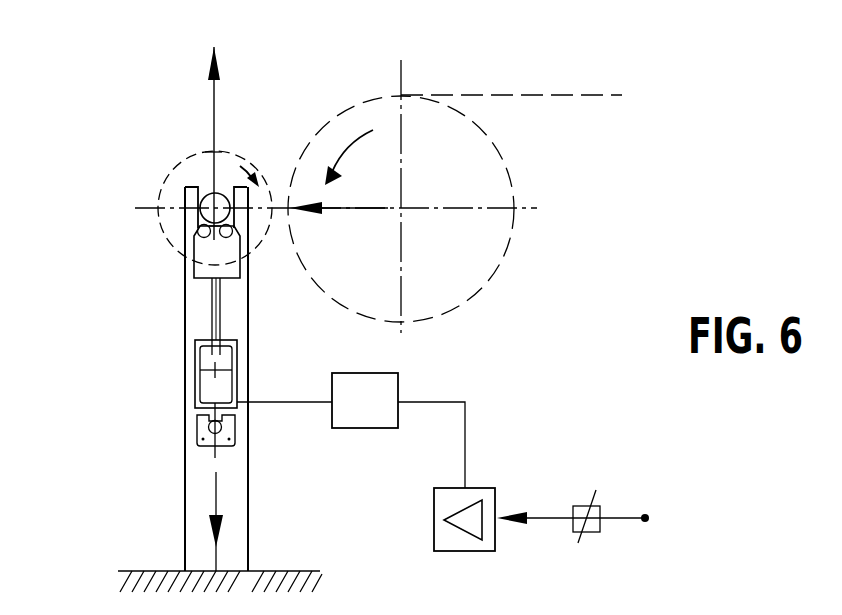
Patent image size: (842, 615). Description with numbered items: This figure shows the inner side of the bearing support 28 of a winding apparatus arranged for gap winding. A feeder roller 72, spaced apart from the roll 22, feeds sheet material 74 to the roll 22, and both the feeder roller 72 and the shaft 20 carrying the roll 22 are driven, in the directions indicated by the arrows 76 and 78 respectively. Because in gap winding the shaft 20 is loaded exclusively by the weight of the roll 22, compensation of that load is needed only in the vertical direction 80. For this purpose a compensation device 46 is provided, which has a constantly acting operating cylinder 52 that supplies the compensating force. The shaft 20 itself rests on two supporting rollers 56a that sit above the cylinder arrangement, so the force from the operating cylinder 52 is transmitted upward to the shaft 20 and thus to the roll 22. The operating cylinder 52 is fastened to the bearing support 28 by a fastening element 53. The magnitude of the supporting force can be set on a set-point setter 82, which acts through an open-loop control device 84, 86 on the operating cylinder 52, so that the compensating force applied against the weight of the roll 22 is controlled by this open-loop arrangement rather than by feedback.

The shaft 20 is at (218, 193).
The roll 22 is at (150, 150).
The bearing support 28 is at (252, 324).
The compensation device 46 is at (150, 337).
The operating cylinder 52 is at (194, 385).
The fastening element 53 is at (196, 428).
The supporting rollers 56a is at (200, 236).
The feeder roller 72 is at (488, 275).
The sheet material 74 is at (544, 94).
The arrow 76 is at (350, 146).
The arrow 78 is at (242, 163).
The vertical direction 80 is at (213, 95).
The set-point setter 82 is at (580, 505).
The open-loop control device 84 is at (434, 520).
The open-loop control device 86 is at (360, 429).